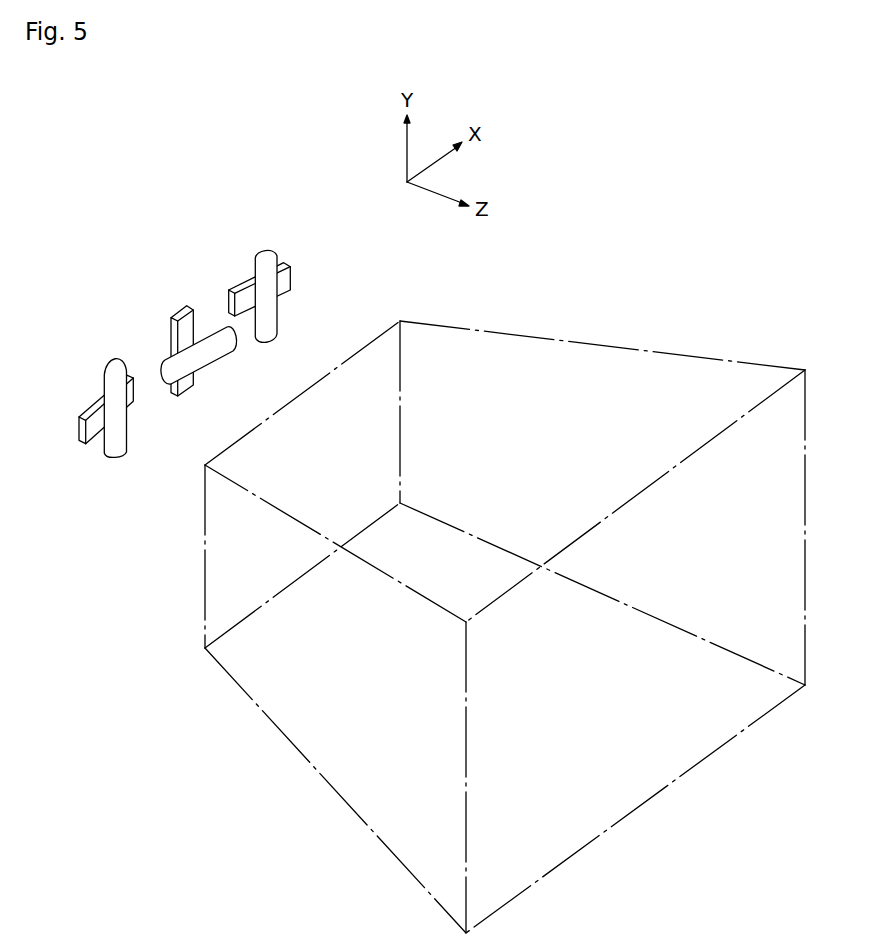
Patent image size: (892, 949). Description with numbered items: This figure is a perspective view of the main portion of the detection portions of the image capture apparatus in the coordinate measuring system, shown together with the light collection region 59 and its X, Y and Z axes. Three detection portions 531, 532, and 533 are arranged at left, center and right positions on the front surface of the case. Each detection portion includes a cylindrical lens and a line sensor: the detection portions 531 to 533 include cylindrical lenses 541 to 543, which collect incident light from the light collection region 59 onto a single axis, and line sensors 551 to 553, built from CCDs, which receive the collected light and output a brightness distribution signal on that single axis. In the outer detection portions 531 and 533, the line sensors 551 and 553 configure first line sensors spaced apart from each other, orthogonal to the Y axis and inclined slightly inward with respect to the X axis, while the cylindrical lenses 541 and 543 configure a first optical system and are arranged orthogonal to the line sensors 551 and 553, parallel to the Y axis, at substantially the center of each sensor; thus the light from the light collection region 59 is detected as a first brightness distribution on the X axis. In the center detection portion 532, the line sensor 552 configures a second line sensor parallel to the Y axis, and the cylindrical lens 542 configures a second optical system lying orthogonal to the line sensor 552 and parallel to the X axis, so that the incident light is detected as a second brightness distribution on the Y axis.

The detection portion 531 is at (86, 356).
The detection portion 532 is at (153, 310).
The detection portion 533 is at (243, 238).
The cylindrical lens 541 is at (118, 452).
The cylindrical lens 542 is at (215, 348).
The cylindrical lens 543 is at (273, 310).
The line sensor 551 is at (77, 437).
The line sensor 552 is at (177, 312).
The line sensor 553 is at (295, 278).
The light collection region 59 is at (330, 787).